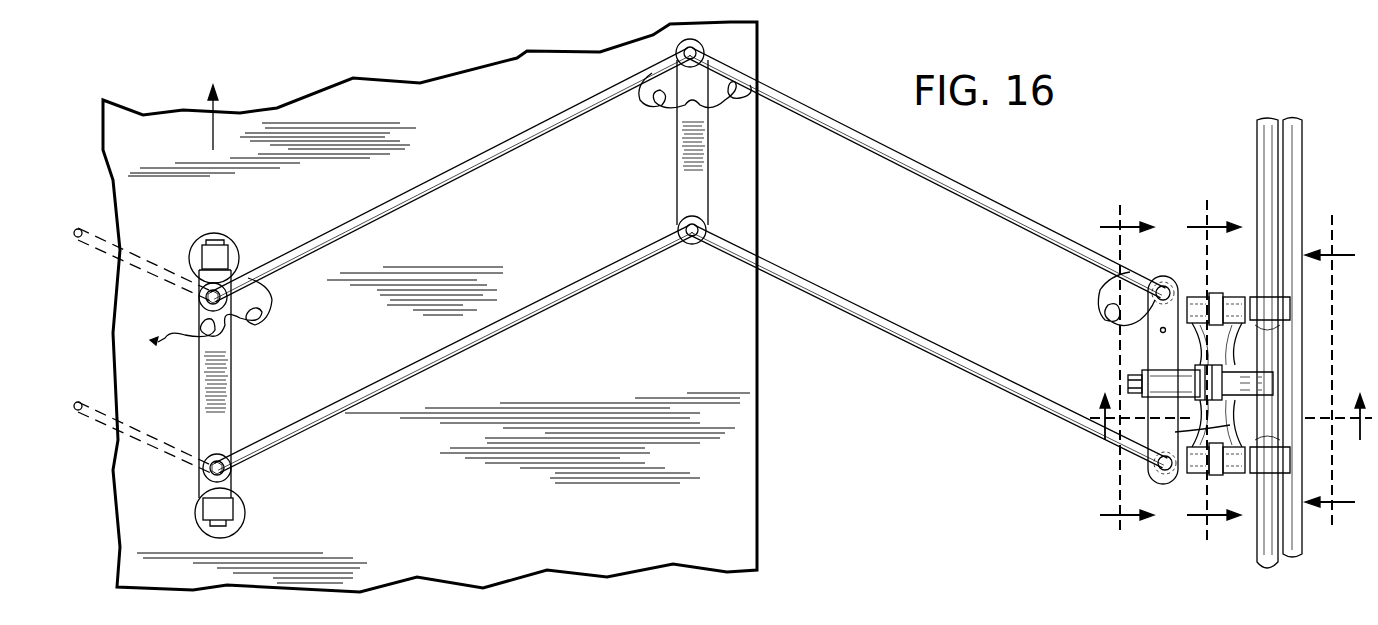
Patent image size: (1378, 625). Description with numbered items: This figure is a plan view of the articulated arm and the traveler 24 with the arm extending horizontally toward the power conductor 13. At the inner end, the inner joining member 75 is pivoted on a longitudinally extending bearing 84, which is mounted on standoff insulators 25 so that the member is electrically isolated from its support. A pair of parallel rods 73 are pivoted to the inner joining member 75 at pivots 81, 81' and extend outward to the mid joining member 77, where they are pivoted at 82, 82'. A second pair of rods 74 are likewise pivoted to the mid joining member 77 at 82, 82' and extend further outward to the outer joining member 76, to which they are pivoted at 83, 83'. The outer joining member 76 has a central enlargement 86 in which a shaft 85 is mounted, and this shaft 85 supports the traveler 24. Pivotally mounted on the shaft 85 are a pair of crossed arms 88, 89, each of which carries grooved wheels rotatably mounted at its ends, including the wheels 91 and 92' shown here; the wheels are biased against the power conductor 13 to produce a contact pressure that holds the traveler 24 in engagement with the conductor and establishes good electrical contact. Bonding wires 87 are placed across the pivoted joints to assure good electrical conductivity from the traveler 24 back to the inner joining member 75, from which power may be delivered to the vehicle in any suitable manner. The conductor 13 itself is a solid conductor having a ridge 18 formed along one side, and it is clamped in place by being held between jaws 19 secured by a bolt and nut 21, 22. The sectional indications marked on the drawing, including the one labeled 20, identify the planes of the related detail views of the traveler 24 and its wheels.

The conductor 13 is at (1258, 542).
The ridge 18 is at (1328, 556).
The jaws 19 is at (1202, 372).
The section line 20 is at (1339, 374).
The bolt 21 is at (1216, 430).
The nut 22 is at (470, 562).
The traveler 24 is at (1247, 351).
The standoff insulators 25 is at (230, 240).
The parallel rods 73 is at (458, 172).
The rods 74 is at (962, 200).
The inner joining member 75 is at (232, 385).
The outer joining member 76 is at (1145, 340).
The mid joining member 77 is at (676, 165).
The pivot 81 is at (185, 477).
The pivot 81' is at (177, 300).
The pivot 82 is at (688, 260).
The pivot 82' is at (739, 53).
The pivot 83 is at (1161, 482).
The pivot 83' is at (1161, 274).
The longitudinally extending bearing 84 is at (208, 250).
The shaft 85 is at (1126, 384).
The central enlargement 86 is at (1150, 375).
The bonding wires 87 is at (272, 307).
The crossed arm 88 is at (1198, 345).
The crossed arm 89 is at (1191, 436).
The grooved wheel 91 is at (1250, 480).
The grooved wheel 92' is at (1218, 285).